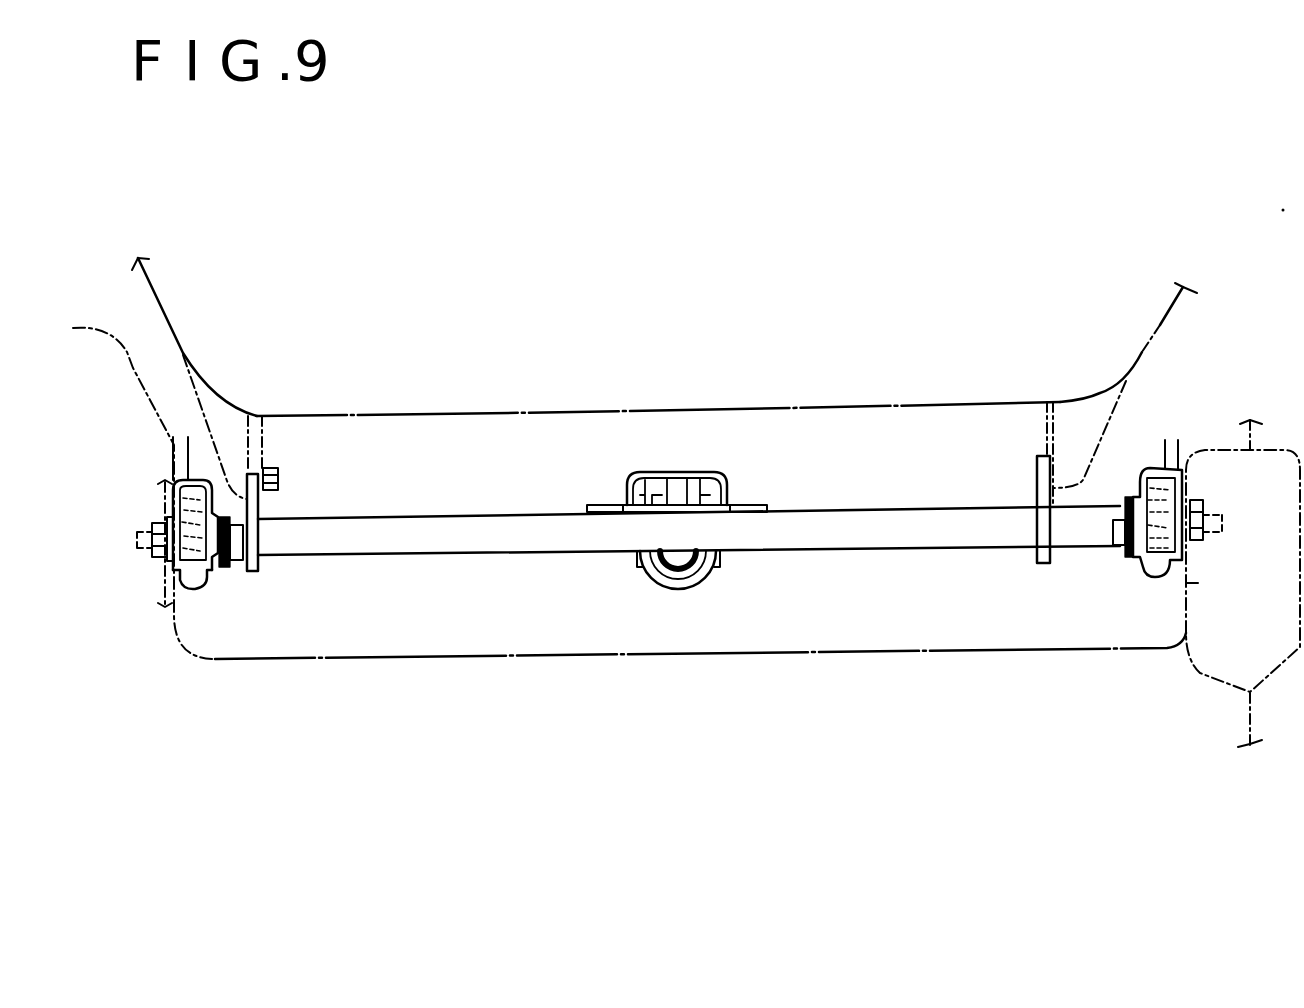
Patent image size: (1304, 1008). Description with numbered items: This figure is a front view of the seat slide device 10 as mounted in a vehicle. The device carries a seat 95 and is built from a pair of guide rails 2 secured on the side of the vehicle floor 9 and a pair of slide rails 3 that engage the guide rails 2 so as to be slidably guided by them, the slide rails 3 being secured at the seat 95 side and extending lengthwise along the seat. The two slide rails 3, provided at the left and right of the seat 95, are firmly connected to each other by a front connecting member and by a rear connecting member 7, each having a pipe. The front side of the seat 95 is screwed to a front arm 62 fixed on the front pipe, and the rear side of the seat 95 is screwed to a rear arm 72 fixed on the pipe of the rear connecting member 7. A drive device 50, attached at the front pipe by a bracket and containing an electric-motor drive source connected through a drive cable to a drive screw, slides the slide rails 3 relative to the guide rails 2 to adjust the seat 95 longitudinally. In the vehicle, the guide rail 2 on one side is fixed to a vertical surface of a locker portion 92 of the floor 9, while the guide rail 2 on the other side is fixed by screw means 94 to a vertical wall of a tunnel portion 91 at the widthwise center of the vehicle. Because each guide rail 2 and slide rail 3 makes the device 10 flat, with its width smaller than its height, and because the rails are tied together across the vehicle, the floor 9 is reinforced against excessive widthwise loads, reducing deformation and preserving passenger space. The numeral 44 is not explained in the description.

The guide rail 2 is at (180, 588).
The slide rail 3 is at (205, 581).
The rear connecting member 7 is at (357, 552).
The vehicle floor 9 is at (400, 658).
The seat slide device 10 is at (689, 536).
The kingpin 44 is at (1178, 480).
The drive device 50 is at (725, 469).
The front arm 62 is at (263, 458).
The rear arm 72 is at (278, 483).
The tunnel portion 91 is at (137, 365).
The locker portion 92 is at (1205, 452).
The screw means 94 is at (210, 570).
The seat 95 is at (388, 417).